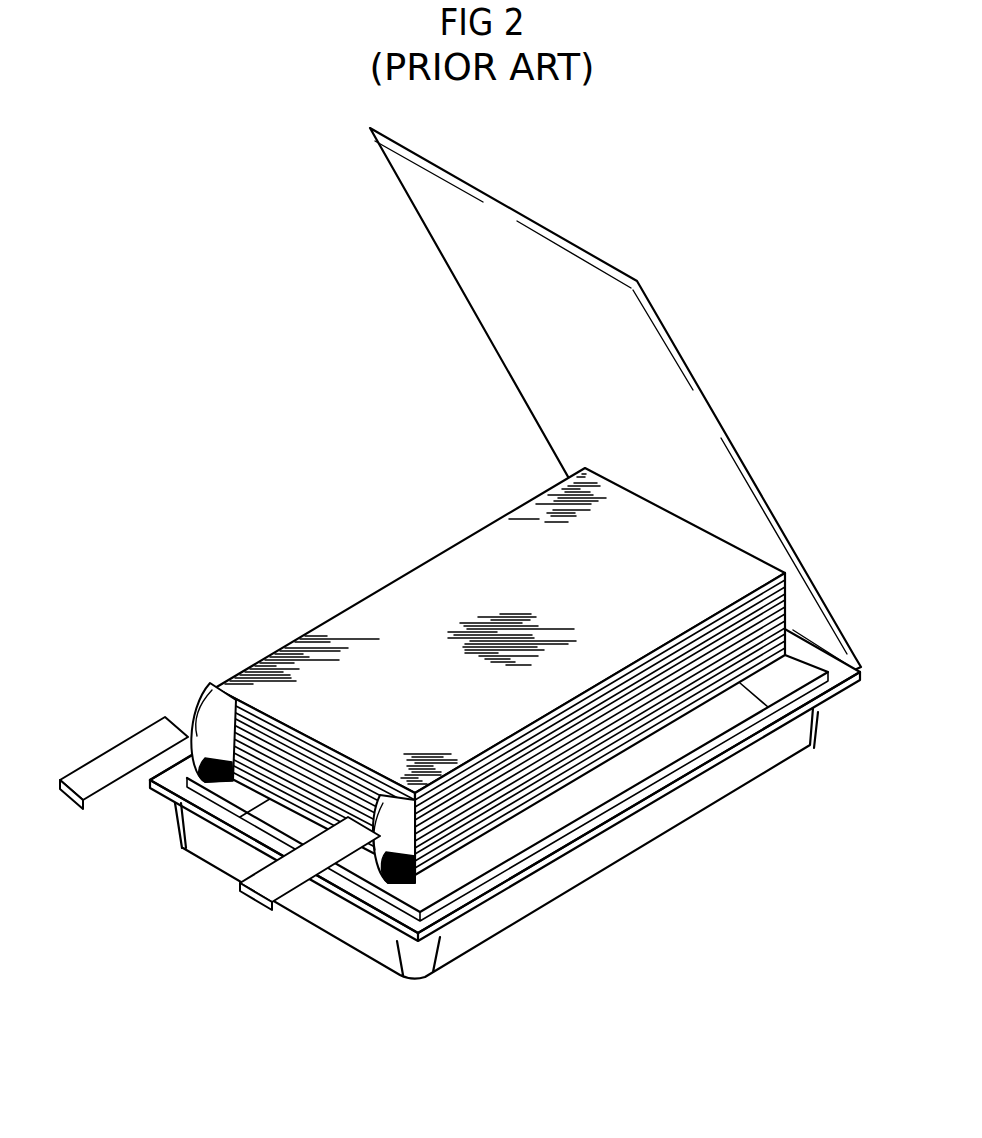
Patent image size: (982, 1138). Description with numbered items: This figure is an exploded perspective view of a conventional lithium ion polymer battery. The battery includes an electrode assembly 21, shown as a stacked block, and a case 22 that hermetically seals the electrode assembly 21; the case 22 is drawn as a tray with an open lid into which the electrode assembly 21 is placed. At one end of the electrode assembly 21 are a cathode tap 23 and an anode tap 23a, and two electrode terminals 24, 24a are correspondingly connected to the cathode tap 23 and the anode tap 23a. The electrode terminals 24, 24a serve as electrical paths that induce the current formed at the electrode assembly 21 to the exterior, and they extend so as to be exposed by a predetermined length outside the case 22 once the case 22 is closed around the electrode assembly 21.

The electrode assembly 21 is at (268, 602).
The case 22 is at (564, 940).
The cathode tap 23 is at (210, 710).
The anode tap 23a is at (395, 813).
The electrode terminal 24 is at (95, 770).
The electrode terminal 24a is at (267, 873).